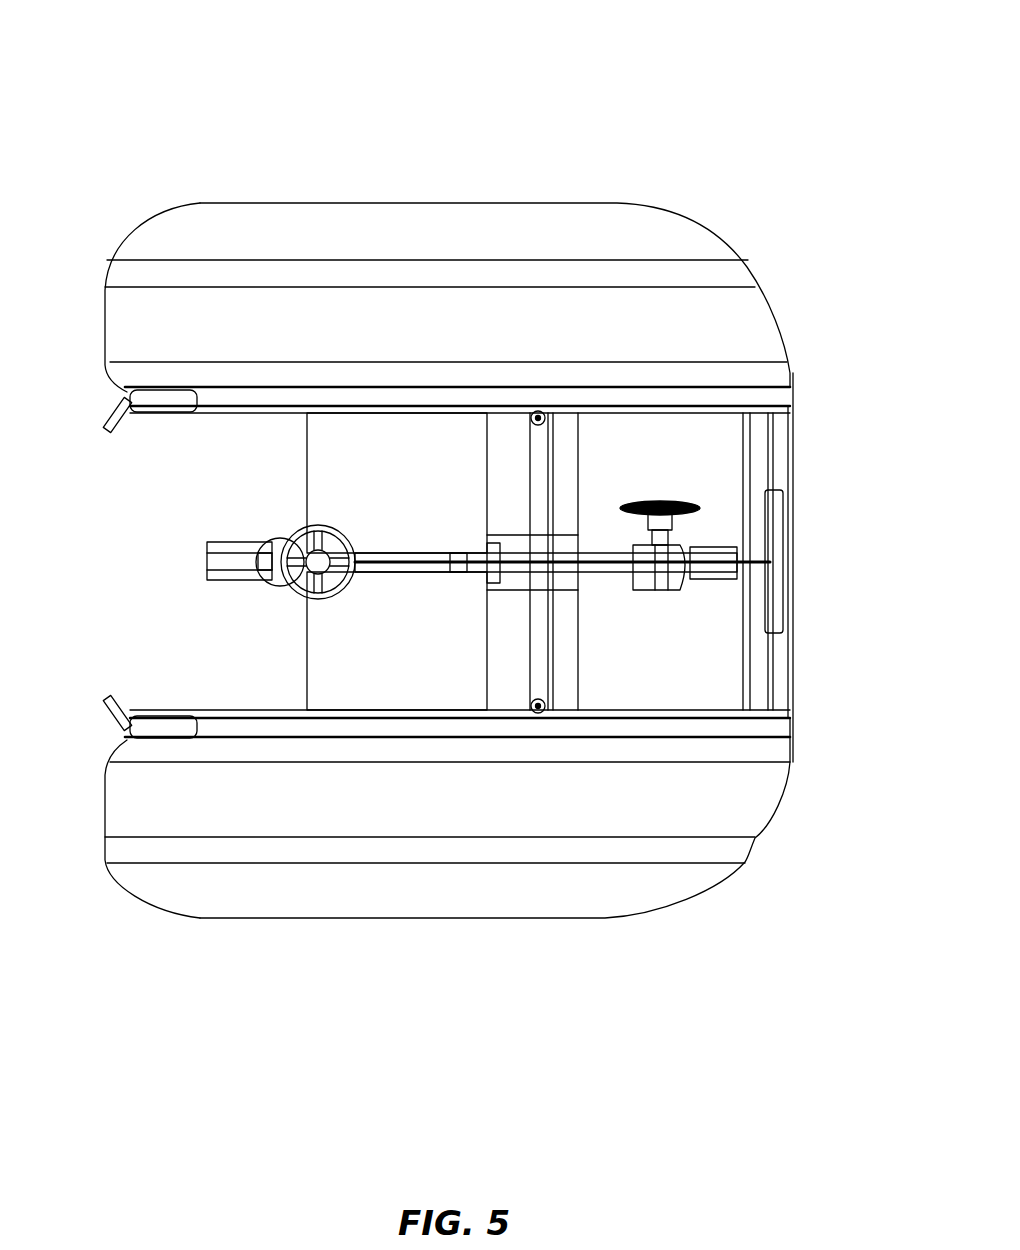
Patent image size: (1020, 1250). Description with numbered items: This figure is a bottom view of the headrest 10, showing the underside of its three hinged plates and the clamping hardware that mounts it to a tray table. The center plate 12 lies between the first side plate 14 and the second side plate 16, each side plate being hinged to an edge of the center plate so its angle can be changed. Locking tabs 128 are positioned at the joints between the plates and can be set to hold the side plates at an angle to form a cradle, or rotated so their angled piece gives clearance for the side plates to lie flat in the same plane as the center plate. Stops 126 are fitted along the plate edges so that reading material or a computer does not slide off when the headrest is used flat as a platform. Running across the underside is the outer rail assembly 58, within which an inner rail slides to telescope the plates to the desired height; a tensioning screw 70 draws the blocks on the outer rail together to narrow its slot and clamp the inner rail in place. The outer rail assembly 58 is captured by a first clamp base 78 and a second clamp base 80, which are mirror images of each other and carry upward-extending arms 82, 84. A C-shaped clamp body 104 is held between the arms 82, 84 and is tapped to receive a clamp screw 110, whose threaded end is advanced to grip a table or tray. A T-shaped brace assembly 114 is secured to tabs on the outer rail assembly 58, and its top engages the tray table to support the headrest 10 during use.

The headrest 10 is at (273, 72).
The center plate 12 is at (667, 462).
The first side plate 14 is at (715, 798).
The second side plate 16 is at (631, 237).
The outer rail assembly 58 is at (593, 578).
The tensioning screw 70 is at (672, 505).
The first clamp base 78 is at (320, 680).
The second clamp base 80 is at (313, 457).
The arm 82 is at (227, 580).
The arm 84 is at (223, 545).
The clamp body 104 is at (262, 562).
The clamp screw 110 is at (300, 537).
The brace assembly 114 is at (777, 562).
The stops 126 is at (110, 418).
The locking tabs 128 is at (538, 404).